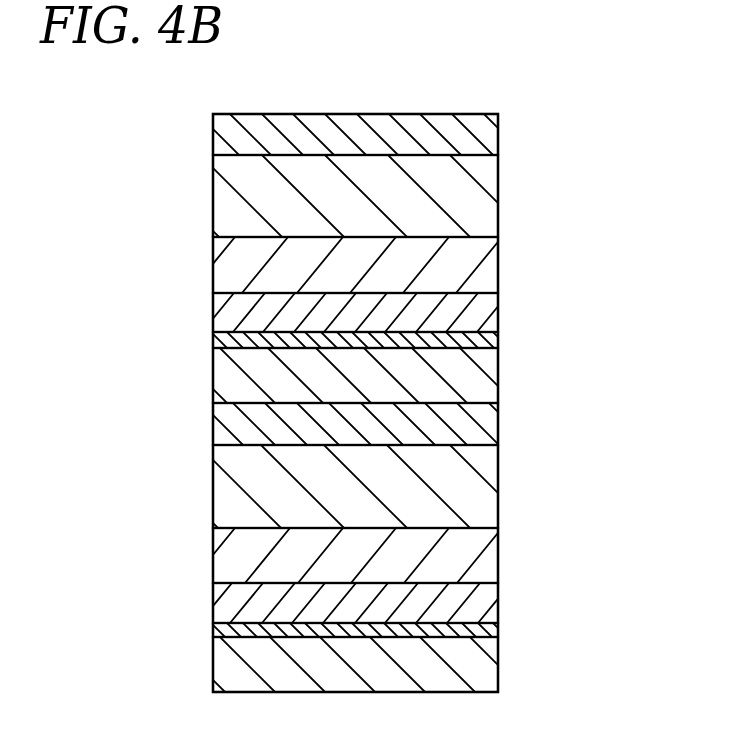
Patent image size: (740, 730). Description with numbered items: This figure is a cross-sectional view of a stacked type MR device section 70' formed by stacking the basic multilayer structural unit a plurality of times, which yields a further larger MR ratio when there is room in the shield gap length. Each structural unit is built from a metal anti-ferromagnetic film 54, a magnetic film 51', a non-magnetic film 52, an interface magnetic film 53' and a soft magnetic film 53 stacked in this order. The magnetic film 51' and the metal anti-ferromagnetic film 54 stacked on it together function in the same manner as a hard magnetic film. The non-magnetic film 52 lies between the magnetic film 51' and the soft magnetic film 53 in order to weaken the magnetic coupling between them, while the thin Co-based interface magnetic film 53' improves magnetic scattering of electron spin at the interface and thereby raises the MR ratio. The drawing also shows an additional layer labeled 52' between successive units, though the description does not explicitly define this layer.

The MR device section 70' is at (371, 363).
The layer 52' is at (404, 279).
The metal anti-ferromagnetic film 54 is at (485, 187).
The magnetic film 51' is at (400, 406).
The non-magnetic film 52 is at (401, 451).
The interface magnetic film 53' is at (411, 484).
The soft magnetic film 53 is at (387, 520).